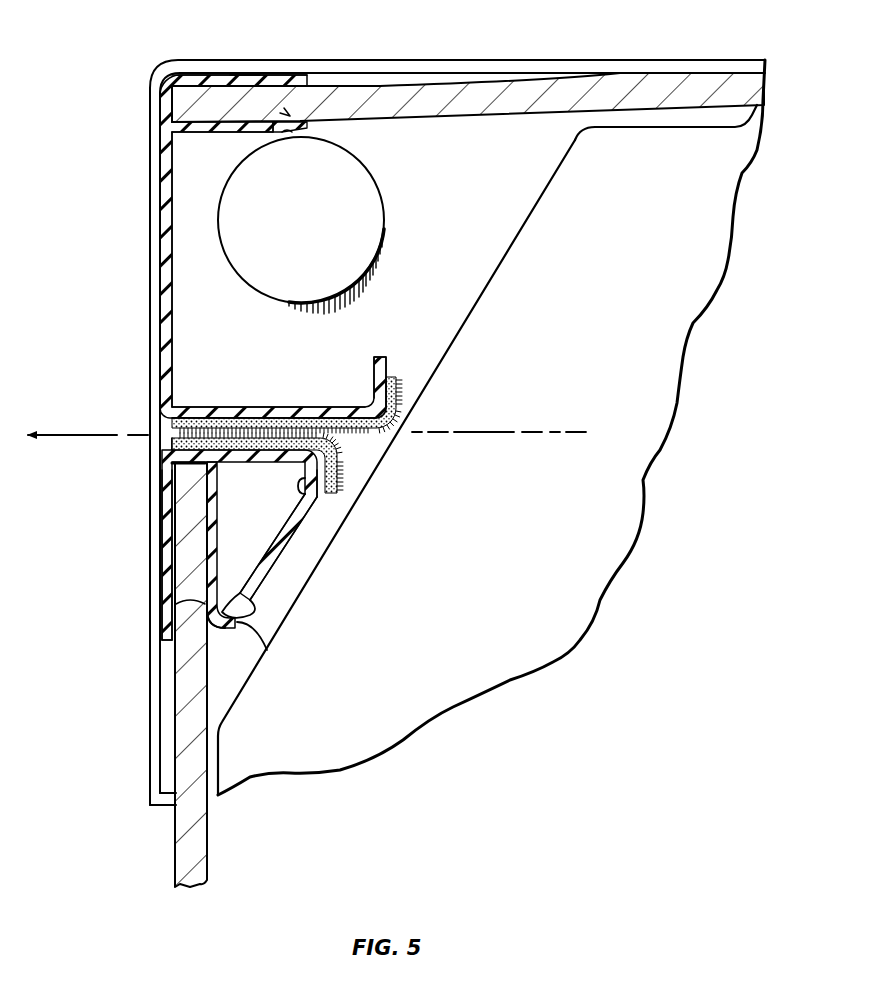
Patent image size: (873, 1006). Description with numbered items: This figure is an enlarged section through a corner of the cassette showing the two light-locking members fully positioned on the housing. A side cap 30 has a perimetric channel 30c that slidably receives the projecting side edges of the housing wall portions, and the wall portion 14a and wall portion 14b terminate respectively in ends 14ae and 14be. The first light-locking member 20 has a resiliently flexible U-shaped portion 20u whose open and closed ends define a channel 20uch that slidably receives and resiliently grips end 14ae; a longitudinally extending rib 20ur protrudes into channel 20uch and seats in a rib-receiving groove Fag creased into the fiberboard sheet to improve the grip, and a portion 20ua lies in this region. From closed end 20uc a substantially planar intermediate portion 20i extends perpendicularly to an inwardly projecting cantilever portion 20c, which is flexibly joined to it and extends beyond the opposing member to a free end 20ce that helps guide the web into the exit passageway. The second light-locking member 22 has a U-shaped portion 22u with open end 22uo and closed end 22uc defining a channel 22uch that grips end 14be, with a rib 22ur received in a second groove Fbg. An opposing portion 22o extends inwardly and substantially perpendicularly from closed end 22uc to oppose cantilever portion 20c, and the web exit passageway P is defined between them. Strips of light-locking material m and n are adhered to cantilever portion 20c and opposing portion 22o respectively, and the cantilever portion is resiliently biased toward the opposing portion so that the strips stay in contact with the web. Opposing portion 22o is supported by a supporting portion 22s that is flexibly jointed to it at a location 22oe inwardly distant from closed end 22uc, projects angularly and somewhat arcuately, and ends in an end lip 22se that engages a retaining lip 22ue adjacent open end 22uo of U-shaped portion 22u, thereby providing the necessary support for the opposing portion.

The side cap 30 is at (443, 57).
The perimetric channel 30c is at (697, 72).
The wall portion 14a is at (530, 82).
The wall portion end 14ae is at (165, 97).
The wall portion 14b is at (187, 758).
The wall portion end 14be is at (175, 458).
The light-locking member 20 is at (152, 212).
The U-shaped portion 20u is at (192, 74).
The channel 20uch is at (246, 74).
The closed end 20uc is at (180, 128).
The abutment of channel 20ua is at (305, 113).
The rib 20ur is at (287, 134).
The intermediate portion 20i is at (160, 262).
The cantilever portion 20c is at (256, 406).
The free end 20ce is at (388, 363).
The light-locking material strip m is at (403, 395).
The light-locking material strip n is at (340, 472).
The web exit passageway P is at (518, 432).
The rib-receiving groove Fag is at (285, 110).
The rib-receiving groove Fbg is at (175, 606).
The light-locking member 22 is at (156, 497).
The U-shaped portion 22u is at (168, 527).
The closed end 22uc is at (177, 447).
The channel 22uch is at (172, 562).
The rib 22ur is at (220, 612).
The open end 22uo is at (170, 645).
The opposing portion 22o is at (268, 464).
The joint location 22oe is at (318, 505).
The supporting portion 22s is at (310, 545).
The end lip 22se is at (258, 614).
The retaining lip 22ue is at (264, 636).